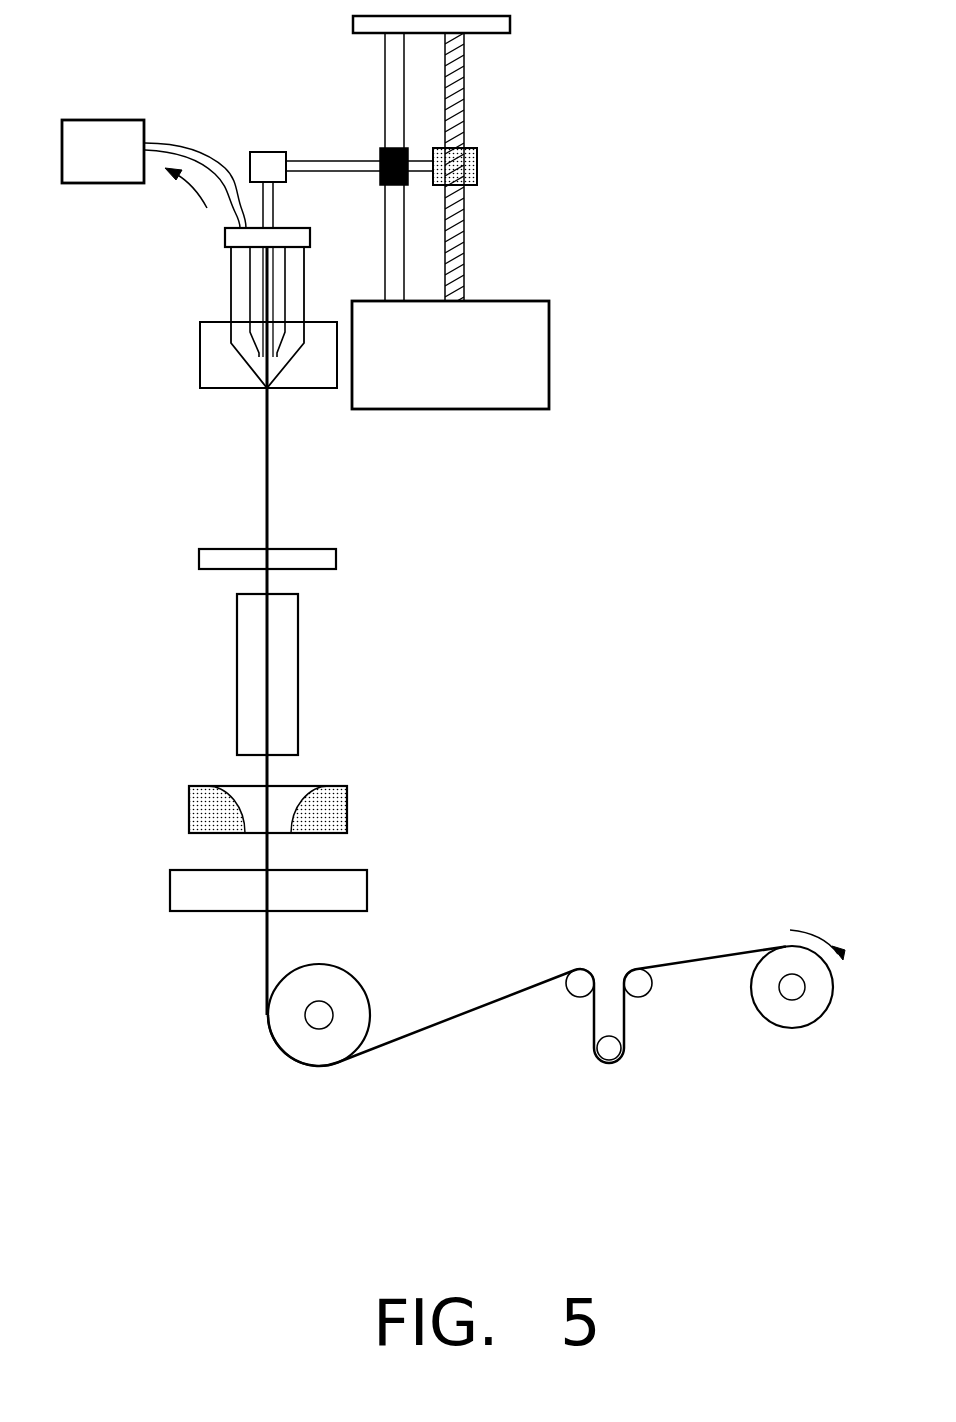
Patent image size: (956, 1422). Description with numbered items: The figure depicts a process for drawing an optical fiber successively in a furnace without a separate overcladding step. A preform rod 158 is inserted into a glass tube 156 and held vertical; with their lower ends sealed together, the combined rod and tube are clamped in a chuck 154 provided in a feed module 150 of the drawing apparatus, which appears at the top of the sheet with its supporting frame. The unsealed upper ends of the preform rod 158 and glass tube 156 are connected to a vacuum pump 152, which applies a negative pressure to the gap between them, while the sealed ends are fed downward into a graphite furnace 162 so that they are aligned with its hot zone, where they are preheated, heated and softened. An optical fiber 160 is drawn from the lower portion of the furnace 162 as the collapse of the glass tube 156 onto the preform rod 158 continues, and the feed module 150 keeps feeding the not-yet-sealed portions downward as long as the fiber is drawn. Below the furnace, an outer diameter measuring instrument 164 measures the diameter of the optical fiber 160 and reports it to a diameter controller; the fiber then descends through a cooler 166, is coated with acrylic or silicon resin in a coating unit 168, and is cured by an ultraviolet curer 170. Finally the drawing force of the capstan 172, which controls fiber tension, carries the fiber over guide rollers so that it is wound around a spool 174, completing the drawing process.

The feed module 150 is at (490, 212).
The vacuum pump 152 is at (103, 120).
The chuck 154 is at (266, 152).
The glass tube 156 is at (235, 284).
The preform rod 158 is at (283, 287).
The optical fiber 160 is at (265, 466).
The furnace 162 is at (200, 357).
The outer diameter measuring instrument 164 is at (337, 556).
The cooler 166 is at (299, 671).
The coating unit 168 is at (348, 806).
The ultraviolet curer 170 is at (369, 886).
The capstan 172 is at (286, 1048).
The spool 174 is at (822, 1016).